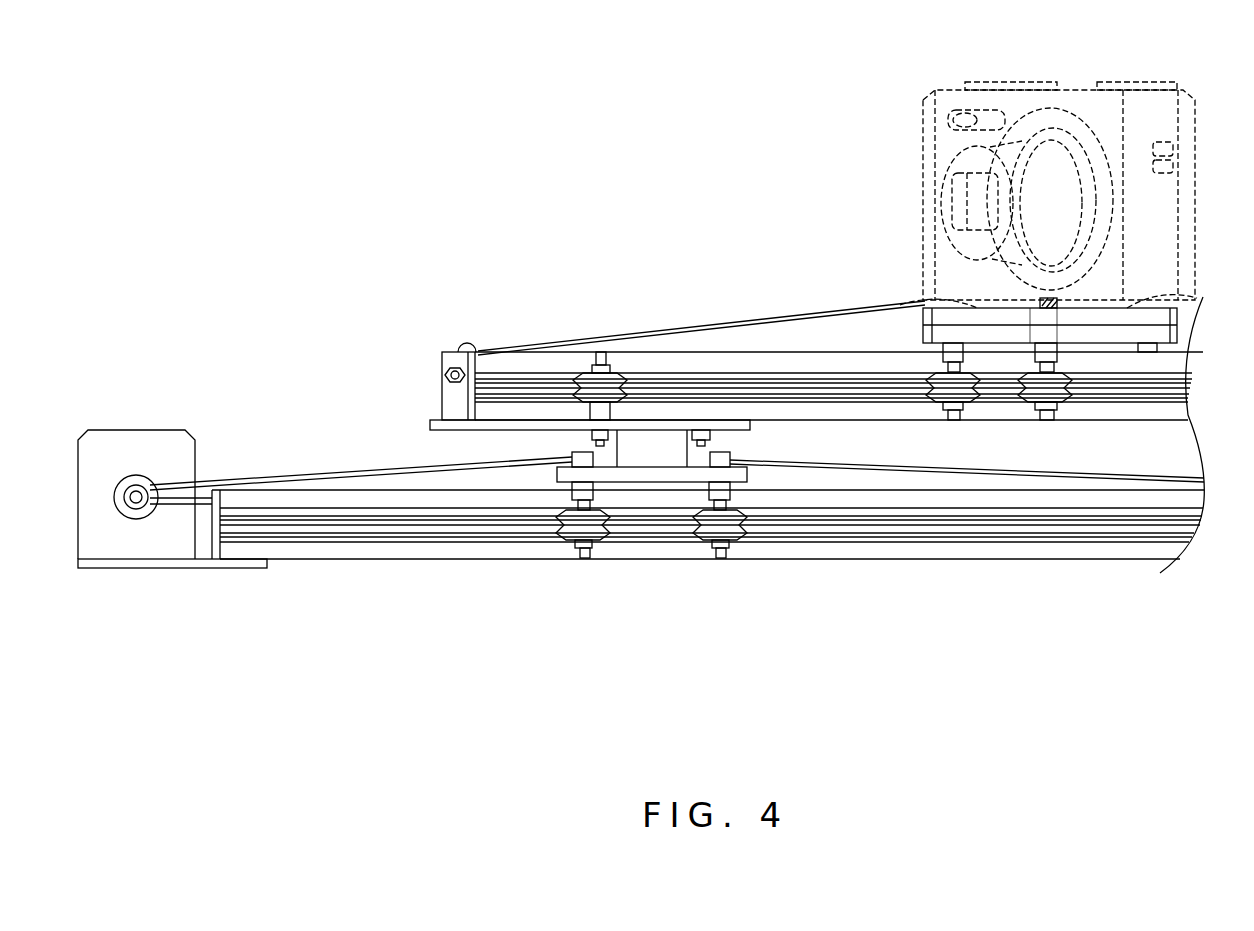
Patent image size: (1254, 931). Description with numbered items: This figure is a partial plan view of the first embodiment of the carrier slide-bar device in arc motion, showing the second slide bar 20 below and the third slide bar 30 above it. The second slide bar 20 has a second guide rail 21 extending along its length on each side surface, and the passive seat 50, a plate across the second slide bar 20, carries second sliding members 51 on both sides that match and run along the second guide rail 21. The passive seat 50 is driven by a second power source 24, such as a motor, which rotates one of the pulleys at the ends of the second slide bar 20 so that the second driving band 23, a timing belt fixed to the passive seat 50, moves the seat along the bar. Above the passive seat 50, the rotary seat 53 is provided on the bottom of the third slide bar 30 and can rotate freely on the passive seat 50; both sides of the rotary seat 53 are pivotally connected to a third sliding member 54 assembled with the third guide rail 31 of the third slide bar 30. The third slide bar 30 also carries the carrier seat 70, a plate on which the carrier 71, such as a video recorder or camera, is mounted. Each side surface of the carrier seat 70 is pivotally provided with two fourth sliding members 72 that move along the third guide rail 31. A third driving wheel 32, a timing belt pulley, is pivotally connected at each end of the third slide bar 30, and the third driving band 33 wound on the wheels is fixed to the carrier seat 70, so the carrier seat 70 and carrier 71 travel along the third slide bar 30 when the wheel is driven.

The second slide bar 20 is at (460, 548).
The second guide rail 21 is at (880, 525).
The second driving band 23 is at (332, 478).
The second power source 24 is at (110, 447).
The third slide bar 30 is at (820, 365).
The third guide rail 31 is at (1167, 390).
The third driving wheel 32 is at (460, 352).
The third driving band 33 is at (745, 323).
The passive seat 50 is at (653, 473).
The second sliding member 51 is at (737, 542).
The rotary seat 53 is at (648, 440).
The third sliding member 54 is at (585, 378).
The carrier seat 70 is at (1185, 327).
The carrier 71 is at (1157, 118).
The fourth sliding member 72 is at (1058, 400).